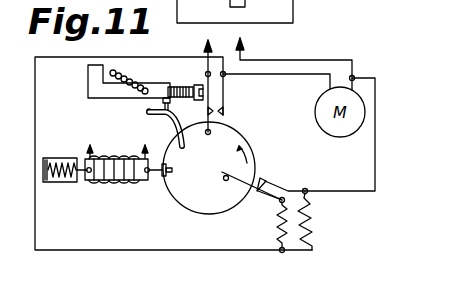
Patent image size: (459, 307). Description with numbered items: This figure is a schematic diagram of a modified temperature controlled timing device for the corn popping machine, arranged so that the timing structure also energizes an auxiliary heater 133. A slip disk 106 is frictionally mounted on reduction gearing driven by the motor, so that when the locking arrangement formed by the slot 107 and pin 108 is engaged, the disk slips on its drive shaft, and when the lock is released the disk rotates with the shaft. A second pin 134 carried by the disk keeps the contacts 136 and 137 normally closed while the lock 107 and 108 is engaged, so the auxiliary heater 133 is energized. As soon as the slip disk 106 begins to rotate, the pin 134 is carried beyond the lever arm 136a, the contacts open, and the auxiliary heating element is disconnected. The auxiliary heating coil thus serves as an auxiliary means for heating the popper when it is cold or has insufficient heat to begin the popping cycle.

The slip disk 106 is at (216, 142).
The slot 107 is at (165, 178).
The pin 108 is at (154, 176).
The auxiliary heater 133 is at (311, 213).
The second pin 134 is at (226, 181).
The contact 136 is at (259, 183).
The lever arm 136a is at (274, 203).
The contact 137 is at (272, 176).